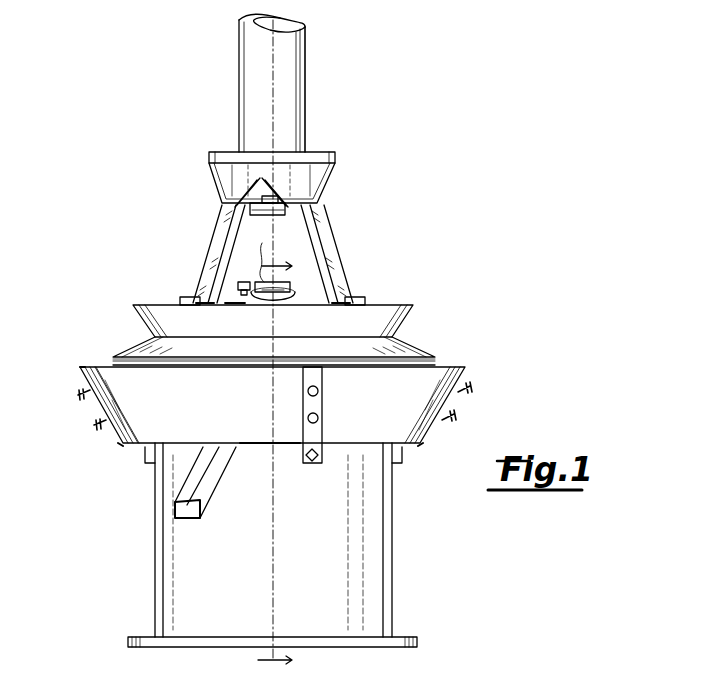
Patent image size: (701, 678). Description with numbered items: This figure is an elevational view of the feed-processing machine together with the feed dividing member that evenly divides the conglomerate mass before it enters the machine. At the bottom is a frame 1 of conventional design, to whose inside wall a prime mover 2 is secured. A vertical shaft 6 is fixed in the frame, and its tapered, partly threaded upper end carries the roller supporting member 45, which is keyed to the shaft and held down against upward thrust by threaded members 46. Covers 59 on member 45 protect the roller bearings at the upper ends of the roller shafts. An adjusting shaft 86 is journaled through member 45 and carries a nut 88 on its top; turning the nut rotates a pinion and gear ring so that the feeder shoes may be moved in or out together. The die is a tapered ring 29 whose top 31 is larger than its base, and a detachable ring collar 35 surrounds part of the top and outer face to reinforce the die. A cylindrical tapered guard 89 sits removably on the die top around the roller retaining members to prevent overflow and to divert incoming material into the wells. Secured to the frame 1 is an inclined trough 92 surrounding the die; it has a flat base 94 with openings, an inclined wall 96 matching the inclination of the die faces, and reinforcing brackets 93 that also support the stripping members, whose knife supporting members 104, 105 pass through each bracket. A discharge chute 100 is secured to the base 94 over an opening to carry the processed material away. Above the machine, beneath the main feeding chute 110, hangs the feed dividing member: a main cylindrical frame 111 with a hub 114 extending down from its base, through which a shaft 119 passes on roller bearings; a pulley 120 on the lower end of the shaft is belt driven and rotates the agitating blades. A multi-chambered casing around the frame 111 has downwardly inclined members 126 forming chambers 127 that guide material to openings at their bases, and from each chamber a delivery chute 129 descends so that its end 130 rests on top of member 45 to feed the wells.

The frame 1 is at (384, 541).
The prime mover 2 is at (275, 463).
The shaft 6 is at (261, 259).
The die ring 29 is at (400, 347).
The top of the die 31 is at (400, 340).
The detachable ring collar 35 is at (445, 366).
The roller supporting member 45 is at (300, 290).
The threaded members 46 is at (290, 288).
The cover 59 is at (182, 298).
The shaft 86 is at (250, 303).
The nut 88 is at (240, 284).
The cylindrical tapered guard 89 is at (133, 306).
The inclined trough 92 is at (88, 366).
The reinforcing brackets 93 is at (122, 446).
The flat base 94 is at (268, 445).
The inclined wall 96 is at (82, 376).
The discharge chute 100 is at (202, 495).
The knife supporting member 104 is at (78, 394).
The knife supporting member 105 is at (94, 424).
The main feeding chute 110 is at (294, 72).
The main cylindrical frame 111 is at (265, 176).
The hub 114 is at (262, 200).
The shaft 119 is at (272, 215).
The pulley 120 is at (250, 210).
The downwardly inclined members 126 is at (262, 189).
The chambers 127 is at (218, 154).
The delivery chute 129 is at (222, 215).
The end of delivery chute 130 is at (208, 305).